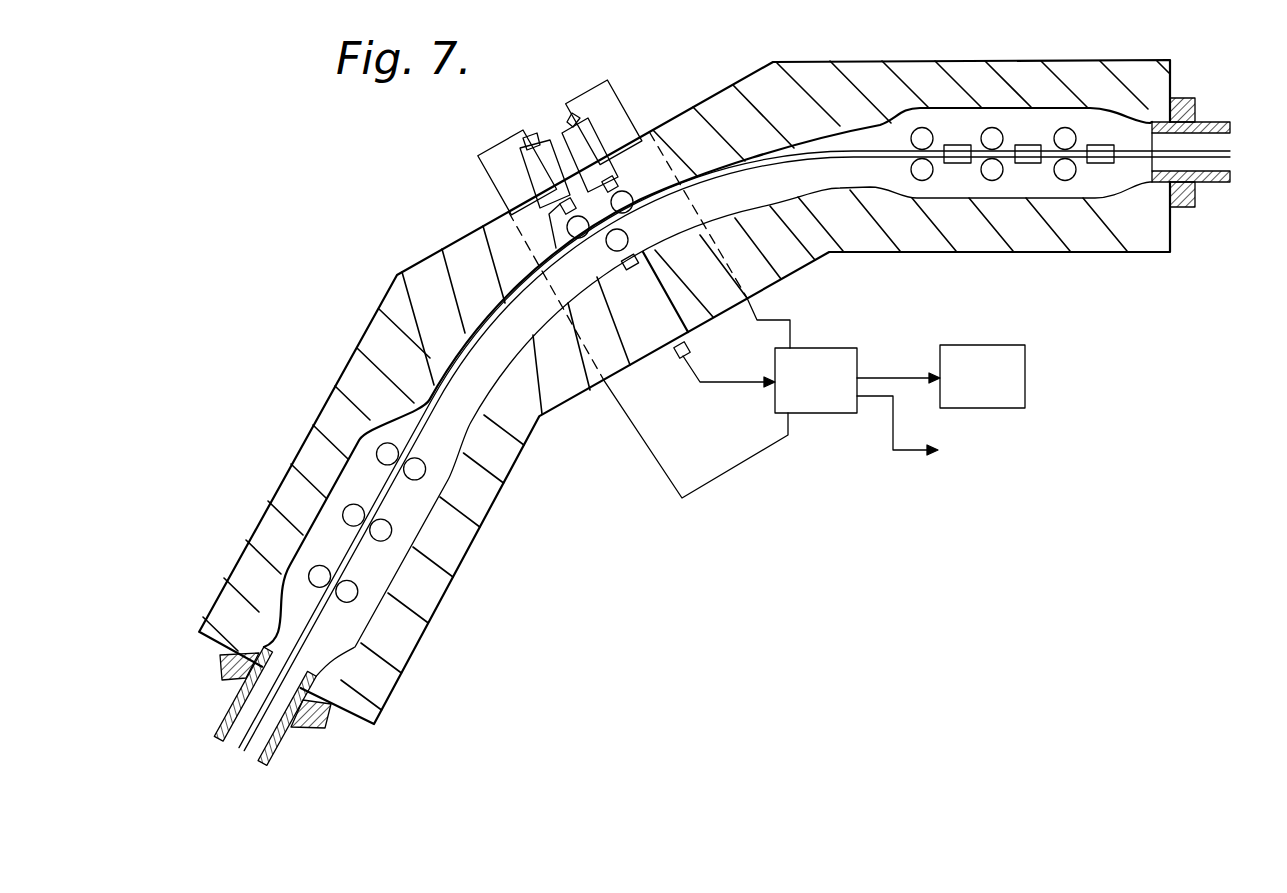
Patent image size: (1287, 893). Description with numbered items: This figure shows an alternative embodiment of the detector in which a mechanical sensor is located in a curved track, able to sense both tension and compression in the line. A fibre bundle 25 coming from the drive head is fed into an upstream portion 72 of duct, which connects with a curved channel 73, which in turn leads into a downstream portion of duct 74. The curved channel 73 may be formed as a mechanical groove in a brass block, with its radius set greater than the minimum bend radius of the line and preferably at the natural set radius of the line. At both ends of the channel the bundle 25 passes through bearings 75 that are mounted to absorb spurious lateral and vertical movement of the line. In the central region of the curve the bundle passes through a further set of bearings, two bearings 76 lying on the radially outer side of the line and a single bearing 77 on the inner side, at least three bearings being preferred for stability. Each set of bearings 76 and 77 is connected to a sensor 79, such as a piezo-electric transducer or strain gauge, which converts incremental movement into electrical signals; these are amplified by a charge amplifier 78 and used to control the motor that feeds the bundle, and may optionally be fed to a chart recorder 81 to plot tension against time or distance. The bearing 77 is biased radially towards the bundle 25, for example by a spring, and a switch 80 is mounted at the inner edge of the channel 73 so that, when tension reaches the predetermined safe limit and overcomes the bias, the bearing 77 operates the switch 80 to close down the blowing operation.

The fibre bundle 25 is at (396, 498).
The upstream portion of duct 72 is at (1225, 183).
The curved channel 73 is at (773, 190).
The downstream portion of duct 74 is at (238, 712).
The bearings 75 is at (925, 180).
The bearings 76 is at (567, 227).
The bearing 77 is at (628, 236).
The charge amplifier 78 is at (845, 352).
The sensor 79 is at (577, 133).
The switch 80 is at (620, 266).
The chart recorder 81 is at (1025, 352).